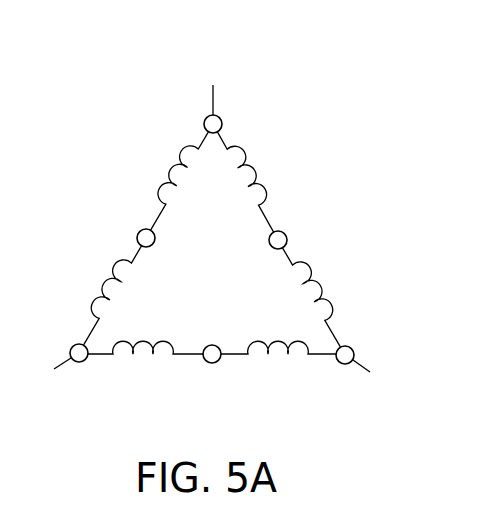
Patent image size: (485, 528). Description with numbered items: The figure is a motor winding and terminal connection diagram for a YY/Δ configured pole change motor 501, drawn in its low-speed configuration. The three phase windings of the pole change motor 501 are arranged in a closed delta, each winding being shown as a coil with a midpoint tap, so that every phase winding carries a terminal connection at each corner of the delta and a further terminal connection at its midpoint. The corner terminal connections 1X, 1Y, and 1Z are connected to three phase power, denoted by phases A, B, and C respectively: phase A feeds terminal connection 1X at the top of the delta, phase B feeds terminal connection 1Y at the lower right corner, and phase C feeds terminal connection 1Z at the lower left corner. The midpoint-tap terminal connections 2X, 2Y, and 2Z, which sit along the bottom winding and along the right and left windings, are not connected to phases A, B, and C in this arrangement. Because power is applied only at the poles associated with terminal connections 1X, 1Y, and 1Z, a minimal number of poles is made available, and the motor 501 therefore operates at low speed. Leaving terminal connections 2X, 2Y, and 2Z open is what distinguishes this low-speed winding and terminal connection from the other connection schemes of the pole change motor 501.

The pole change motor 501 is at (311, 181).
The terminal connection 1X is at (229, 124).
The terminal connection 2X is at (214, 370).
The terminal connection 1Y is at (348, 370).
The terminal connection 2Y is at (295, 240).
The terminal connection 1Z is at (78, 368).
The terminal connection 2Z is at (134, 240).
The phase A is at (213, 88).
The phase B is at (371, 373).
The phase C is at (54, 372).